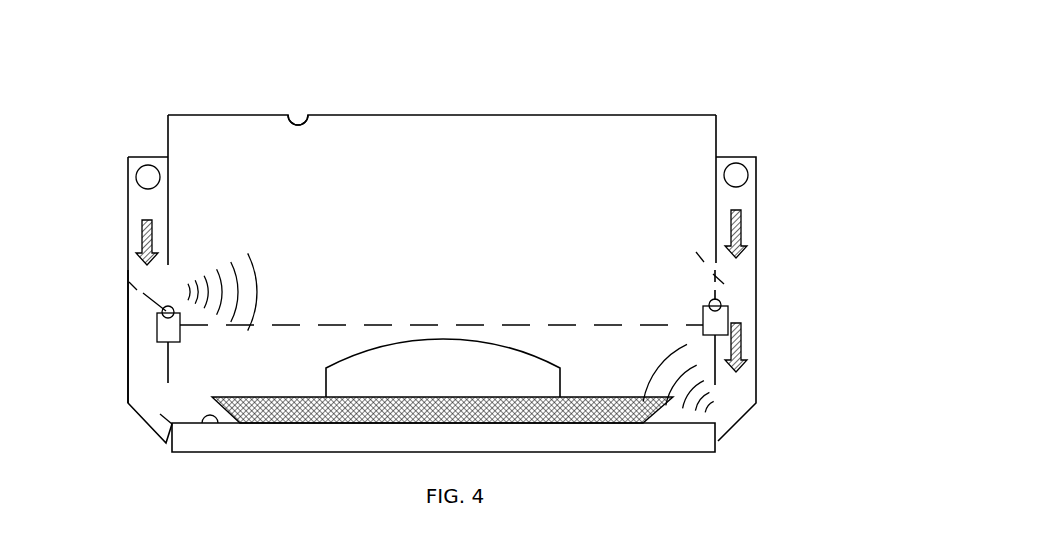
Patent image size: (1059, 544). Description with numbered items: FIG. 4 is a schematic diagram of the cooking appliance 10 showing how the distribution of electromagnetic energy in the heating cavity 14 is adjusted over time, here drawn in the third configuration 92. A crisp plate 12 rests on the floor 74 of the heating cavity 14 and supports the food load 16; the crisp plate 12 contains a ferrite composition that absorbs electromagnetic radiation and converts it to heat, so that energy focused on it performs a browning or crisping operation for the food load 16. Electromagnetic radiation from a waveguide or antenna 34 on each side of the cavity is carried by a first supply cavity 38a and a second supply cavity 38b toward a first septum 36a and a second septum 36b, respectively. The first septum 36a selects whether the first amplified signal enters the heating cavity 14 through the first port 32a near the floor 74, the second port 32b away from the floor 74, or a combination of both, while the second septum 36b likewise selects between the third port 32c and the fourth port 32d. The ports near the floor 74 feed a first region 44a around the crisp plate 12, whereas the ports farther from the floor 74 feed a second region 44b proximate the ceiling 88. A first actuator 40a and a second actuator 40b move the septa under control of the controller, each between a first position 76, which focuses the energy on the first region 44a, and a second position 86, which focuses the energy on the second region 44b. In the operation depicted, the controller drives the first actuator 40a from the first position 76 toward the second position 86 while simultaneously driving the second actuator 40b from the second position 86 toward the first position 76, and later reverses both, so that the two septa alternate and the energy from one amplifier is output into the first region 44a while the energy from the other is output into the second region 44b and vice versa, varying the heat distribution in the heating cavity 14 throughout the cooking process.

The cooking appliance 10 is at (693, 75).
The third configuration 92 is at (736, 299).
The crisp plate 12 is at (285, 424).
The heating cavity 14 is at (441, 253).
The food load 16 is at (372, 383).
The first port 32a is at (728, 403).
The second port 32b is at (700, 257).
The third port 32c is at (167, 407).
The fourth port 32d is at (180, 275).
The waveguide or antenna 34 is at (140, 167).
The first septum 36a is at (724, 284).
The second septum 36b is at (142, 293).
The first supply cavity 38a is at (750, 210).
The second supply cavity 38b is at (135, 218).
The first actuator 40a is at (740, 330).
The second actuator 40b is at (156, 332).
The first region 44a is at (569, 360).
The second region 44b is at (440, 183).
The floor 74 is at (203, 418).
The first position 76 is at (740, 267).
The second position 86 is at (122, 273).
The ceiling 88 is at (288, 113).